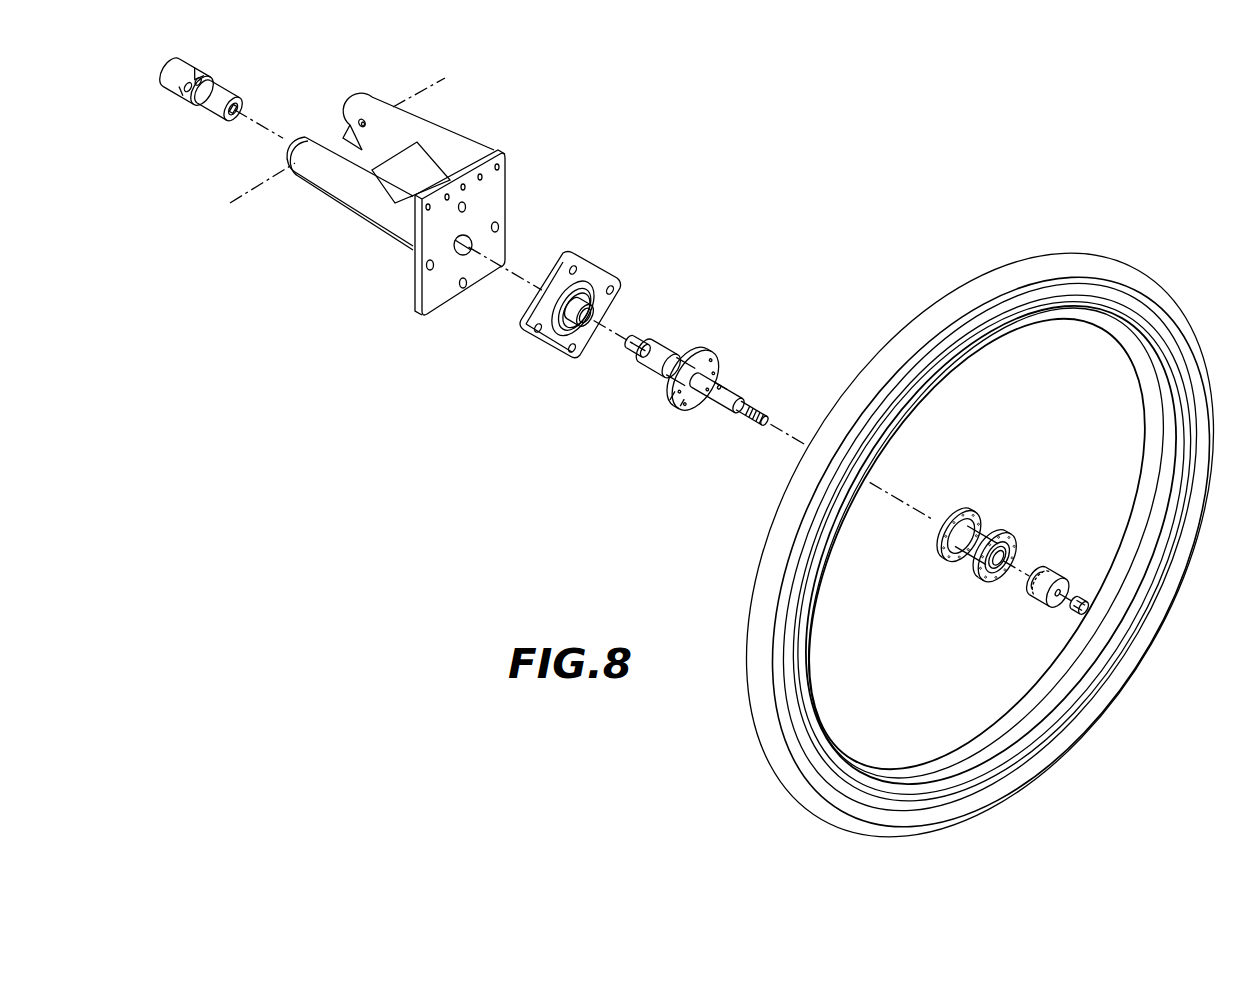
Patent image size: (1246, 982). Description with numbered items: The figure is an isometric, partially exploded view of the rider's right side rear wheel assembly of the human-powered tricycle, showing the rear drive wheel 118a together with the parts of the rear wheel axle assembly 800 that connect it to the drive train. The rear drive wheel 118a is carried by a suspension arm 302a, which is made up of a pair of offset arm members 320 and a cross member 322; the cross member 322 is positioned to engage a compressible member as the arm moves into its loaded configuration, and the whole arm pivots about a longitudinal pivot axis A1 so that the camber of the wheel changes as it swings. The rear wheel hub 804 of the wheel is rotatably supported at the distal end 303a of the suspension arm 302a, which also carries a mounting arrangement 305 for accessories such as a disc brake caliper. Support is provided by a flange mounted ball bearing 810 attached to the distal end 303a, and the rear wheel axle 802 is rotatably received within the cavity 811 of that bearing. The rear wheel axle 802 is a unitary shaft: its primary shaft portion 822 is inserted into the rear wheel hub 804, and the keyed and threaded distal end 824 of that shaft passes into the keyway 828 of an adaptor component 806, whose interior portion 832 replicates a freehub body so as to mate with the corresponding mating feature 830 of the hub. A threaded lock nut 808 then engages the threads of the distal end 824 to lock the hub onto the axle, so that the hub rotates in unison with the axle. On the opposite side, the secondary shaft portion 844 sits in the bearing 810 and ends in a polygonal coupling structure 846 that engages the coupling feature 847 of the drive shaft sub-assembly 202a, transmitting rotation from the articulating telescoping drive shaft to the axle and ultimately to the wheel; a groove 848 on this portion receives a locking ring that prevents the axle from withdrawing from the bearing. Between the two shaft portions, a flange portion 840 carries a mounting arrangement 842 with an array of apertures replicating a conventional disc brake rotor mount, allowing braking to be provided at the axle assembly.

The rear drive wheel 118a is at (1142, 270).
The drive shaft sub-assembly 202a is at (197, 64).
The coupling feature 847 is at (230, 128).
The suspension arm 302a is at (432, 198).
The offset arm members 320 is at (387, 192).
The cross member 322 is at (362, 148).
The distal end of the suspension arm 303a is at (498, 208).
The mounting arrangement 305 is at (482, 178).
The pivot axis A1 is at (258, 188).
The rear wheel axle assembly 800 is at (815, 441).
The bearing 810 is at (587, 273).
The cavity of the bearing 811 is at (598, 316).
The coupling structure 846 is at (642, 345).
The groove 848 is at (645, 364).
The secondary shaft portion 844 is at (665, 369).
The flange portion 840 is at (703, 358).
The rear wheel axle 802 is at (720, 385).
The distal end of the primary shaft 824 is at (762, 405).
The primary shaft portion 822 is at (712, 398).
The mounting arrangement 842 is at (697, 396).
The rear wheel hub 804 is at (978, 537).
The mating feature 830 is at (1001, 548).
The keyway 828 is at (1051, 584).
The interior portion 832 is at (1030, 588).
The adaptor component 806 is at (1040, 596).
The threaded lock nut 808 is at (1073, 604).